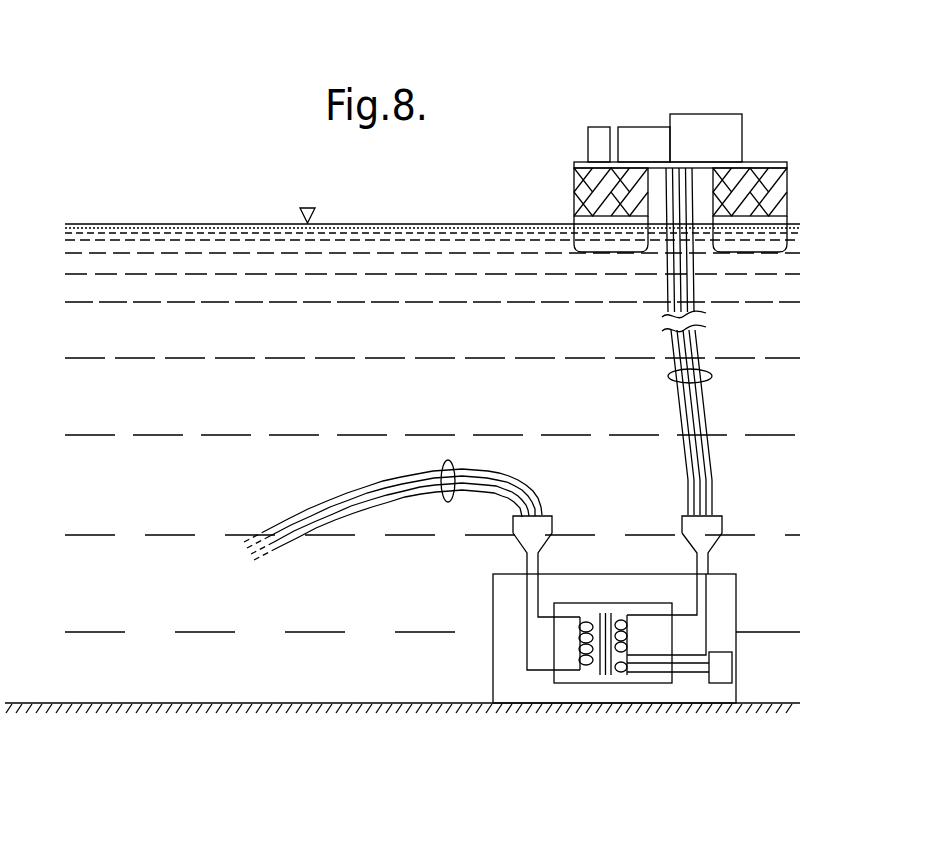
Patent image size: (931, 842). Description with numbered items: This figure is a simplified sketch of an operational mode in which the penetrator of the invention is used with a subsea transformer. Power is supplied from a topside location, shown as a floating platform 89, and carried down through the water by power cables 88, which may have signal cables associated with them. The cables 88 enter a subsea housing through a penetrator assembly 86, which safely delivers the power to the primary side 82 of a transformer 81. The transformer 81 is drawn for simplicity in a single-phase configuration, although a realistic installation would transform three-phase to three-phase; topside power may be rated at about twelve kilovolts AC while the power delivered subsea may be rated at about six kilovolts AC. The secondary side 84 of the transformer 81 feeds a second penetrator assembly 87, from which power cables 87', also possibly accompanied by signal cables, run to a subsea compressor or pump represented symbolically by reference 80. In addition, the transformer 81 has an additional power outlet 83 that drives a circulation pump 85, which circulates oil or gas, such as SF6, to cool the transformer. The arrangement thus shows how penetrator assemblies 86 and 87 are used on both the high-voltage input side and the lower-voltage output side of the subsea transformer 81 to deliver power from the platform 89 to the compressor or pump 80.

The subsea compressor or pump 80 is at (251, 584).
The transformer 81 is at (588, 605).
The primary side 82 is at (627, 637).
The additional power outlet 83 is at (623, 672).
The secondary side 84 is at (578, 643).
The circulation pump 85 is at (725, 662).
The penetrator assembly 86 is at (713, 543).
The penetrator assembly 87 is at (488, 549).
The power cables 87' is at (408, 498).
The power cables 88 is at (712, 377).
The floating platform 89 is at (703, 104).